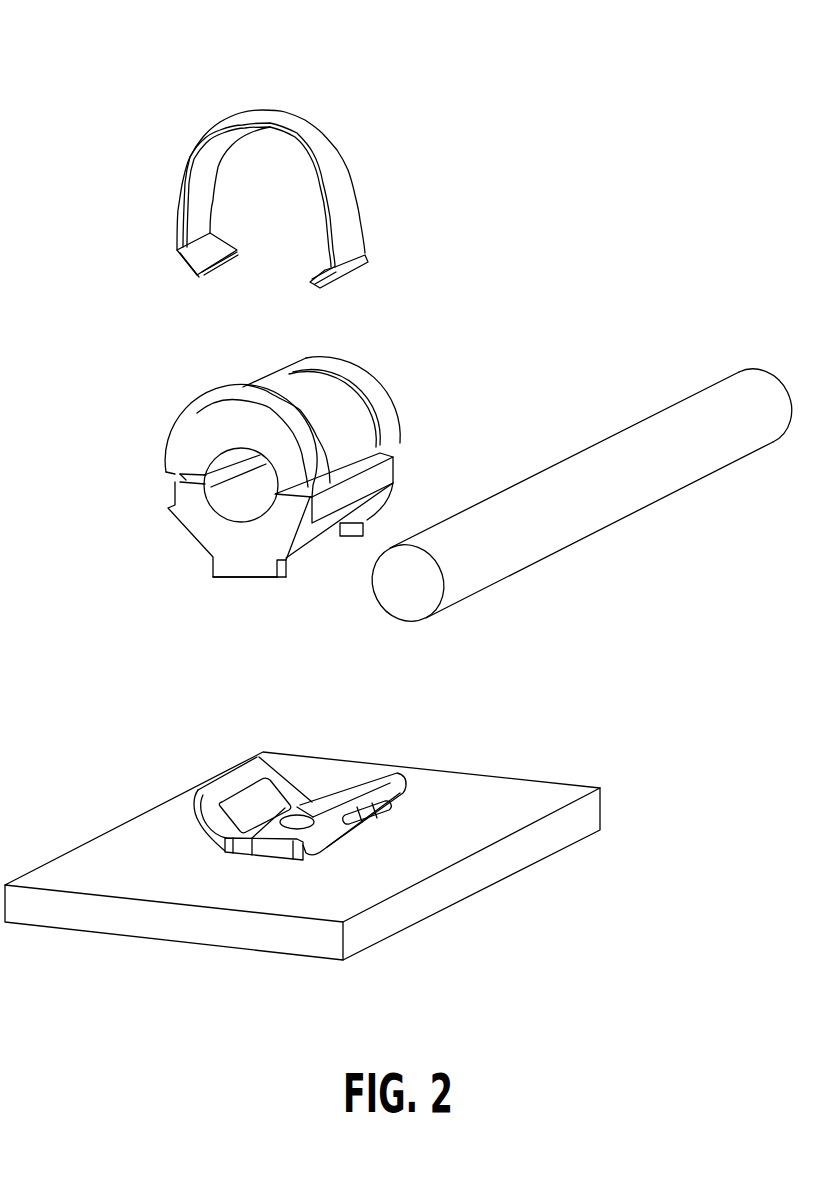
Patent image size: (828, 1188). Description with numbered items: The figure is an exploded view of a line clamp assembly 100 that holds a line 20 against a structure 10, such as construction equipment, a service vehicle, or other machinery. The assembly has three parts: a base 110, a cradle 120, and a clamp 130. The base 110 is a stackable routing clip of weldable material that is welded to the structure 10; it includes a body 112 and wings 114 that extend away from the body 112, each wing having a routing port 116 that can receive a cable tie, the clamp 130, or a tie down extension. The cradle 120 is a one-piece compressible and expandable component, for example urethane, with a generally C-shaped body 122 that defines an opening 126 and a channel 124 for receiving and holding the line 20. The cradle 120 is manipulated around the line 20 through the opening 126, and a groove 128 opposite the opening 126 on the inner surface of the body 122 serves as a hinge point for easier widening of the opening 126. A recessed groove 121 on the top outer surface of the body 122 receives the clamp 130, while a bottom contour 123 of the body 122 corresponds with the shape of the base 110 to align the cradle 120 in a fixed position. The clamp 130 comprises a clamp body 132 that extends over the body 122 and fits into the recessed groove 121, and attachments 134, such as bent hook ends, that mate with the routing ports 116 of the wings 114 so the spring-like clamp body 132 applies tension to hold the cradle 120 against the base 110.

The line clamp assembly 100 is at (625, 110).
The structure 10 is at (503, 810).
The line 20 is at (662, 482).
The base 110 is at (158, 713).
The body 112 is at (305, 805).
The wings 114 is at (212, 828).
The routing ports 116 is at (260, 808).
The cradle 120 is at (152, 358).
The recessed groove 121 is at (343, 403).
The body 122 is at (200, 435).
The bottom contour 123 is at (240, 565).
The channel 124 is at (232, 505).
The opening 126 is at (380, 457).
The groove 128 is at (190, 480).
The clamp 130 is at (168, 70).
The clamp body 132 is at (300, 137).
The attachments 134 is at (195, 252).